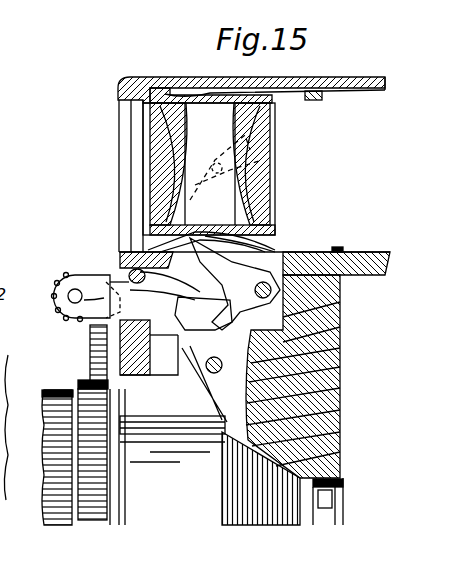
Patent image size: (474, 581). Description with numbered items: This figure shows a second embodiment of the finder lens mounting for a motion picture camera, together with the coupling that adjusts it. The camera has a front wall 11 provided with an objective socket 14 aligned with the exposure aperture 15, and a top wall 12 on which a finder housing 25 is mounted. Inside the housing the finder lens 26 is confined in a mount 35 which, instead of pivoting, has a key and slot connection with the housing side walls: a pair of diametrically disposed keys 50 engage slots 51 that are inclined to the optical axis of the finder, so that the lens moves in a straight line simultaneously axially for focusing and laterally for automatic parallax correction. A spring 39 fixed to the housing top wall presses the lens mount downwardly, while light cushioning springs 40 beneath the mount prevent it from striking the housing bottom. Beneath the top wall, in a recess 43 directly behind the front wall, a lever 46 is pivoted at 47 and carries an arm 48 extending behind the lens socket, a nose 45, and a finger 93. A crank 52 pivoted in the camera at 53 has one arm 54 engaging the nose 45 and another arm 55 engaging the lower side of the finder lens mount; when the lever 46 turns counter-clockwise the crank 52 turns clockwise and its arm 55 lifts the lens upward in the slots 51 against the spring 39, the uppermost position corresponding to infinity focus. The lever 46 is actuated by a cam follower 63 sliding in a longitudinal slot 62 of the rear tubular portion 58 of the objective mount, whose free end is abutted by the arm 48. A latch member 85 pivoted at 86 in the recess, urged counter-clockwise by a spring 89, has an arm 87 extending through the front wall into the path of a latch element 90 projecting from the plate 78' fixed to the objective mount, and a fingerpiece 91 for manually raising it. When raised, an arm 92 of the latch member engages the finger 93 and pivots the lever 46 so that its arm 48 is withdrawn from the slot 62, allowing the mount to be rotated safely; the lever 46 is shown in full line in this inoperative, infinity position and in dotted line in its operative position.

The front wall 11 is at (88, 383).
The top wall 12 is at (362, 278).
The objective socket 14 is at (80, 420).
The exposure aperture 15 is at (345, 507).
The finder housing 25 is at (124, 88).
The finder lens 26 is at (222, 128).
The mount 35 is at (160, 94).
The spring 39 is at (210, 93).
The cushioning springs 40 is at (185, 240).
The recess 43 is at (332, 433).
The nose 45 is at (332, 368).
The lever 46 is at (332, 411).
The pivot 47 is at (332, 390).
The arm 48 is at (332, 453).
The keys 50 is at (268, 192).
The slots 51 is at (270, 222).
The crank 52 is at (332, 328).
The pivot 53 is at (332, 304).
The arm 54 is at (332, 350).
The arm 55 is at (268, 248).
The rear tubular portion 58 is at (245, 478).
The longitudinal slot 62 is at (168, 434).
The cam follower 63 is at (132, 437).
The plate 78' is at (88, 475).
The latch member 85 is at (72, 278).
The pivot 86 is at (92, 340).
The arm 87 is at (92, 308).
The spring 89 is at (124, 258).
The latch element 90 is at (128, 274).
The fingerpiece 91 is at (66, 299).
The arm 92 is at (135, 372).
The finger 93 is at (205, 284).